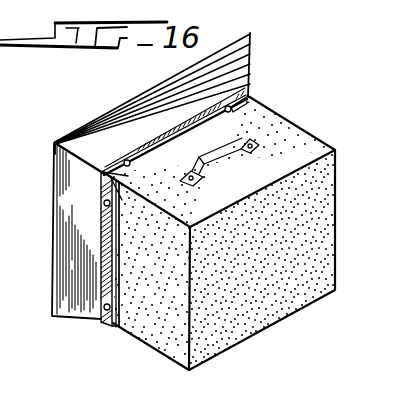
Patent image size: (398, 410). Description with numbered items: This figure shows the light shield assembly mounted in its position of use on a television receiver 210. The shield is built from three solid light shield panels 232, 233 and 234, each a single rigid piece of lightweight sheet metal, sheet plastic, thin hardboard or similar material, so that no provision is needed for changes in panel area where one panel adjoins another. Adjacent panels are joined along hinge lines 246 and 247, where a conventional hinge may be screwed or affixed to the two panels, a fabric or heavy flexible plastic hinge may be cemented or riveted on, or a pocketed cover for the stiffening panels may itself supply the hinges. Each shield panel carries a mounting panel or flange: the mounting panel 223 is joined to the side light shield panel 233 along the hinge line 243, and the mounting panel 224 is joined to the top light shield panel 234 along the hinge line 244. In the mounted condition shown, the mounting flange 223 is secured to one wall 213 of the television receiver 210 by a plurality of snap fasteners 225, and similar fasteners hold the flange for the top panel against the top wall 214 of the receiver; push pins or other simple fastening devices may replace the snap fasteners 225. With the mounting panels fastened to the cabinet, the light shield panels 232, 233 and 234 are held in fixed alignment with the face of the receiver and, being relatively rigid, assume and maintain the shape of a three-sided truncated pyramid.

The television receiver 210 is at (265, 305).
The wall of television receiver 213 is at (152, 325).
The top wall of television receiver 214 is at (247, 191).
The mounting panel 223 is at (110, 286).
The mounting panel 224 is at (202, 126).
The snap fasteners 225 is at (232, 112).
The light shield panel 232 is at (255, 91).
The light shield panel 233 is at (63, 248).
The light shield panel 234 is at (138, 106).
The hinge line 243 is at (102, 234).
The hinge line 244 is at (134, 158).
The hinge line 246 is at (252, 60).
The hinge line 247 is at (66, 141).